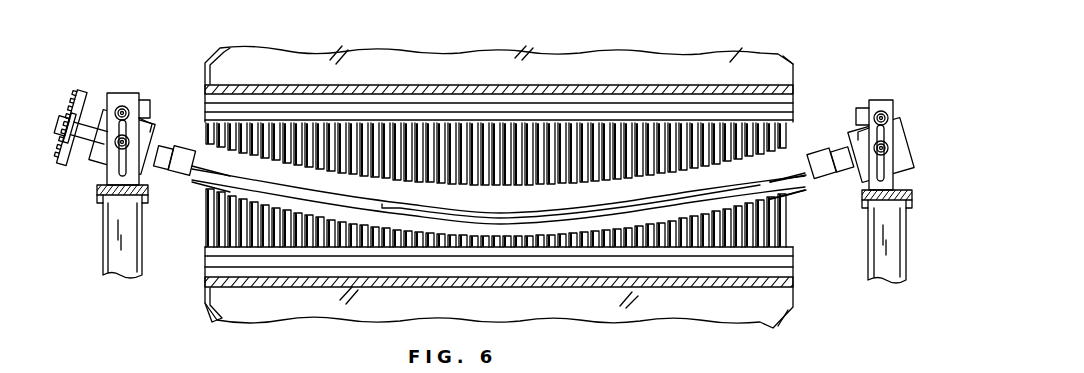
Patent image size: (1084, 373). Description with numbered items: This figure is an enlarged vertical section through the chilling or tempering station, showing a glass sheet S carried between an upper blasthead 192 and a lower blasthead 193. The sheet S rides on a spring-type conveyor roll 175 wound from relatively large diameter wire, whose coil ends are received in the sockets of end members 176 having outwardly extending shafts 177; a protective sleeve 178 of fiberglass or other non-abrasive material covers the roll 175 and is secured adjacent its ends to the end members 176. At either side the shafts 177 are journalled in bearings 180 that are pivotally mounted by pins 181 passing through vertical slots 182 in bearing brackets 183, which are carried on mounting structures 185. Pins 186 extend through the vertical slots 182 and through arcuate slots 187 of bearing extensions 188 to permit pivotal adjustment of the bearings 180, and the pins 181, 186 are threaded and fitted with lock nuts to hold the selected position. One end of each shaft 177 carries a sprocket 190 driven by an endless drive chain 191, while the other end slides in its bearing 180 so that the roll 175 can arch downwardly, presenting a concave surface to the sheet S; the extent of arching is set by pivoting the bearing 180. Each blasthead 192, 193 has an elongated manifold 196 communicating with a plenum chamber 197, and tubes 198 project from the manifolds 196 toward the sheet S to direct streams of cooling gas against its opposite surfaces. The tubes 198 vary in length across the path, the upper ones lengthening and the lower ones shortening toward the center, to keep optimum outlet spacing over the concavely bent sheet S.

The fourth conveyor rolls 175 is at (794, 155).
The end members 176 is at (174, 168).
The shafts 177 is at (169, 154).
The sleeve 178 is at (797, 188).
The bearings 180 is at (157, 127).
The pins 181 is at (120, 143).
The vertical slots 182 is at (123, 184).
The bearing brackets 183 is at (139, 180).
The mounting structures 185 is at (117, 263).
The pins 186 is at (120, 110).
The arcuate slots 187 is at (150, 120).
The bearing extensions 188 is at (143, 110).
The sprocket 190 is at (78, 103).
The endless drive chain 191 is at (82, 88).
The upper blasthead 192 is at (481, 51).
The lower blasthead 193 is at (764, 334).
The elongated manifold 196 is at (384, 105).
The plenum chamber 197 is at (593, 80).
The tubes 198 is at (251, 160).
The sheet S is at (608, 197).